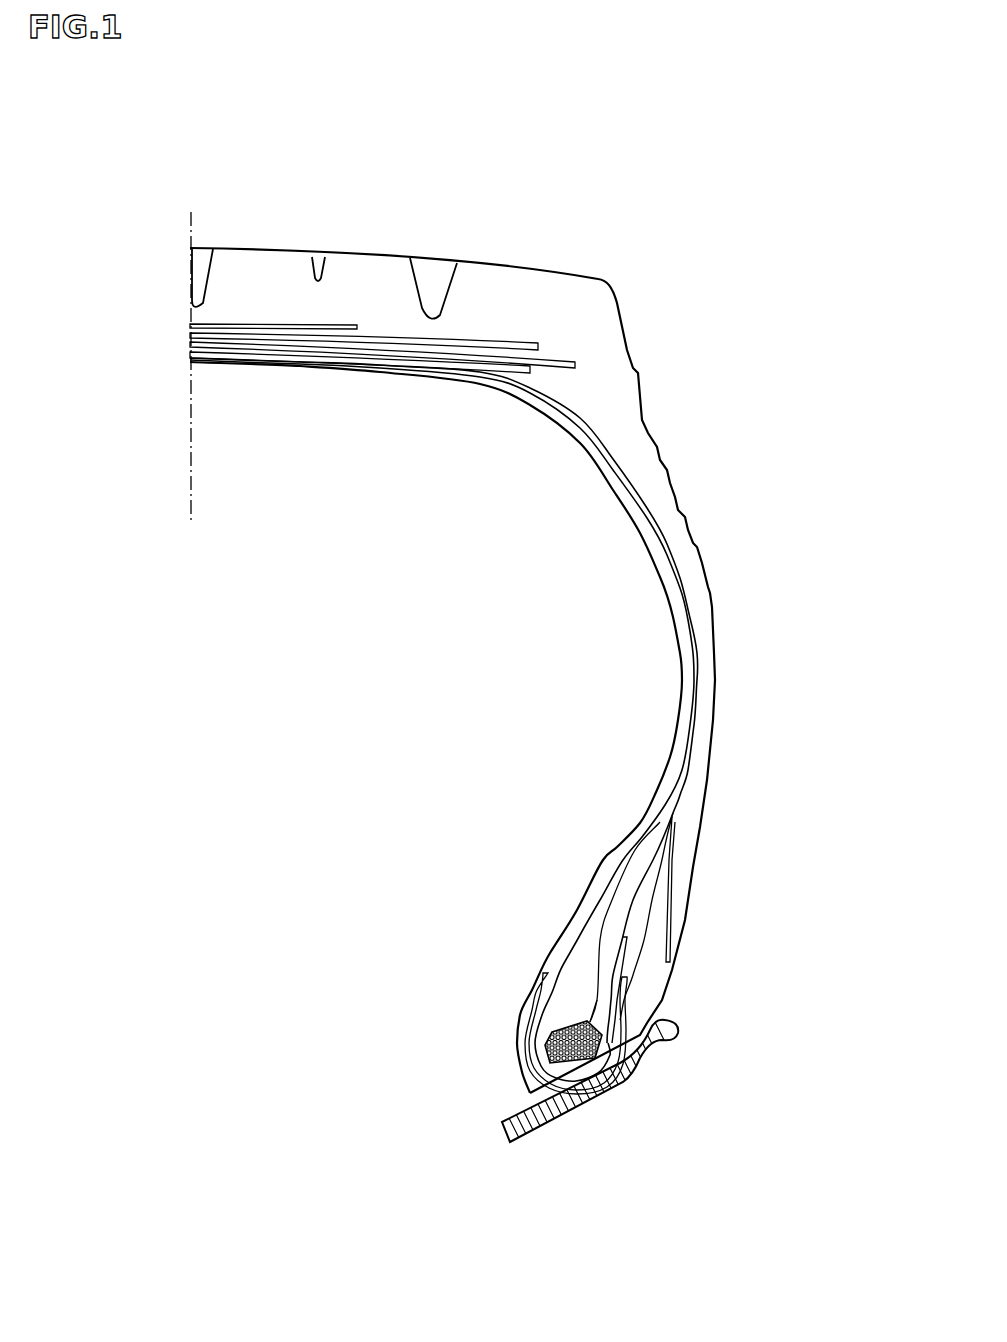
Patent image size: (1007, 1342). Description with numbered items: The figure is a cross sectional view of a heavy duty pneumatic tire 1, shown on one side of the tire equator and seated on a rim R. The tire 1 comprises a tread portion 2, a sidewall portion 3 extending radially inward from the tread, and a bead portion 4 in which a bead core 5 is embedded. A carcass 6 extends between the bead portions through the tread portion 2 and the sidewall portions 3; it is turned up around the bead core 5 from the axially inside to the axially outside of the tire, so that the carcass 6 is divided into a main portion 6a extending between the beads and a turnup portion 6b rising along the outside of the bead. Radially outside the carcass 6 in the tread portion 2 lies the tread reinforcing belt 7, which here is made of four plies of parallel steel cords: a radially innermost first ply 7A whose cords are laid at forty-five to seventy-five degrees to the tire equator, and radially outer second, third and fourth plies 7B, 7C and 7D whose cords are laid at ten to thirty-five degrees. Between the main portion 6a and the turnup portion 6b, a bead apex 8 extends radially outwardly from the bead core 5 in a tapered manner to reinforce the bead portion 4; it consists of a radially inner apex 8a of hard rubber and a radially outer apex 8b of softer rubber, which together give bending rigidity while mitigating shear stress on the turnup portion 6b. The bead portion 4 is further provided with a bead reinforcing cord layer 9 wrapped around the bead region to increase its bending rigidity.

The heavy duty pneumatic tire 1 is at (636, 277).
The tread portion 2 is at (369, 265).
The sidewall portion 3 is at (722, 612).
The bead portion 4 is at (508, 1003).
The bead core 5 is at (582, 1050).
The carcass 6 is at (490, 832).
The main portion 6a is at (643, 828).
The turnup portion 6b is at (605, 950).
The tread reinforcing belt 7 is at (113, 283).
The first ply 7A is at (191, 355).
The second ply 7B is at (191, 344).
The third ply 7C is at (191, 335).
The fourth ply 7D is at (191, 326).
The bead apex 8 is at (442, 887).
The inner apex 8a is at (577, 980).
The outer apex 8b is at (618, 948).
The bead reinforcing cord layer 9 is at (617, 1015).
The rim R is at (532, 1123).